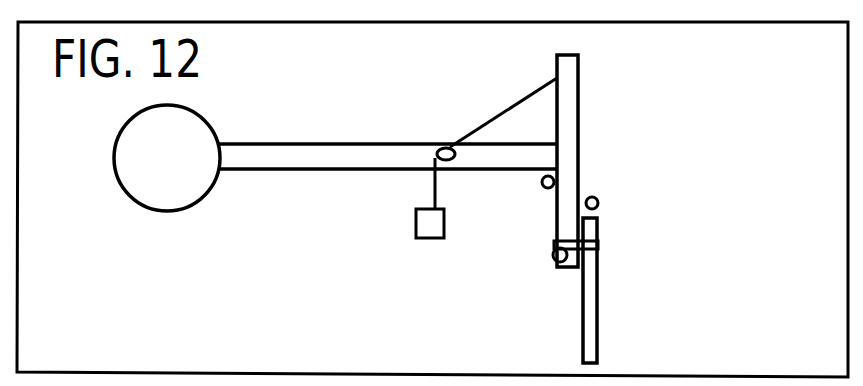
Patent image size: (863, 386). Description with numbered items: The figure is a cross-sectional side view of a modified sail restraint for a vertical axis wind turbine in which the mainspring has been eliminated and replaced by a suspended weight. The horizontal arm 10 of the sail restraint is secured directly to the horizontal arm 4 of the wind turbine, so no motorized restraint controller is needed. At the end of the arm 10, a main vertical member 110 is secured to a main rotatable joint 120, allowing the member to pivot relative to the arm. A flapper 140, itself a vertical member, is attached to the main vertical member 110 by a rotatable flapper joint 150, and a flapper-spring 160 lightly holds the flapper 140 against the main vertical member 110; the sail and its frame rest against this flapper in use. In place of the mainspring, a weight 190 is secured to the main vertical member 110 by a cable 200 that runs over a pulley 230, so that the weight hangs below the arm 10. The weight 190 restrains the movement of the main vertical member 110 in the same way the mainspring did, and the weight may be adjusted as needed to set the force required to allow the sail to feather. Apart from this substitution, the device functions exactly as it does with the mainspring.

The horizontal arm of the wind turbine 4 is at (128, 195).
The arm 10 is at (293, 142).
The main vertical member 110 is at (580, 97).
The main rotatable joint 120 is at (542, 182).
The flapper 140 is at (597, 262).
The rotatable flapper joint 150 is at (593, 197).
The flapper-spring 160 is at (567, 270).
The weight 190 is at (417, 212).
The cable 200 is at (510, 107).
The pulley 230 is at (445, 148).